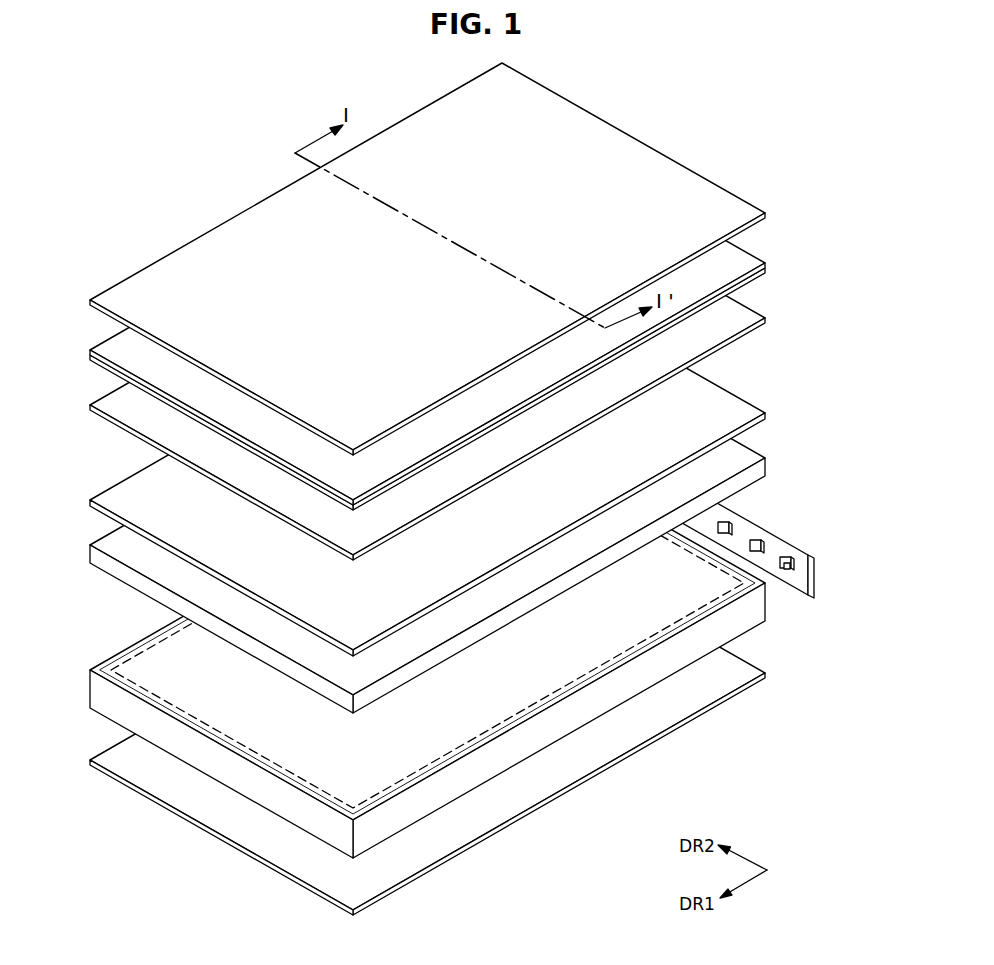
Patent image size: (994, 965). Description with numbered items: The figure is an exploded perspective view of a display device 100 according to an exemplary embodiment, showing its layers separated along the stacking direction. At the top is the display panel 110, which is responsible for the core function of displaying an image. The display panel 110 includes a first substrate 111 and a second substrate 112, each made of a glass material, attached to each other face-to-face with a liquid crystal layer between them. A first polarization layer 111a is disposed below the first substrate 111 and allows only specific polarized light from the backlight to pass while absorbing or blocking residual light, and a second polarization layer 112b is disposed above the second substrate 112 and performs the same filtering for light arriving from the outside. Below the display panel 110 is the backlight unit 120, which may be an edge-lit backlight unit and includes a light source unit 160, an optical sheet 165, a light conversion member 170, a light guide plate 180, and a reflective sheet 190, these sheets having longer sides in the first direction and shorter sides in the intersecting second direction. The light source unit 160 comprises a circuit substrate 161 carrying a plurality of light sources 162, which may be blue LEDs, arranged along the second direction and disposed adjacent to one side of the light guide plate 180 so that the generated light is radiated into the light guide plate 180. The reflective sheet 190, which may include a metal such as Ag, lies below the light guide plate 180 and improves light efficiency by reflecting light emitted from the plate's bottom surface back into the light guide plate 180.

The display device 100 is at (240, 135).
The display panel 110 is at (491, 311).
The first substrate 111 is at (743, 292).
The first polarization layer 111a is at (745, 318).
The second substrate 112 is at (742, 258).
The second polarization layer 112b is at (735, 207).
The backlight unit 120 is at (475, 589).
The light source unit 160 is at (787, 528).
The circuit substrate 161 is at (775, 545).
The light sources 162 is at (788, 569).
The optical sheet 165 is at (745, 410).
The light conversion member 170 is at (745, 457).
The light guide plate 180 is at (778, 611).
The reflective sheet 190 is at (735, 668).